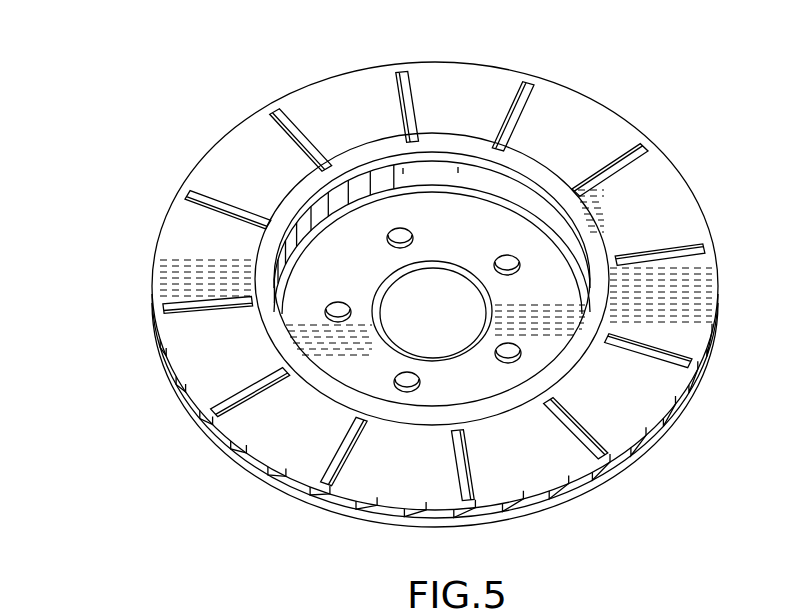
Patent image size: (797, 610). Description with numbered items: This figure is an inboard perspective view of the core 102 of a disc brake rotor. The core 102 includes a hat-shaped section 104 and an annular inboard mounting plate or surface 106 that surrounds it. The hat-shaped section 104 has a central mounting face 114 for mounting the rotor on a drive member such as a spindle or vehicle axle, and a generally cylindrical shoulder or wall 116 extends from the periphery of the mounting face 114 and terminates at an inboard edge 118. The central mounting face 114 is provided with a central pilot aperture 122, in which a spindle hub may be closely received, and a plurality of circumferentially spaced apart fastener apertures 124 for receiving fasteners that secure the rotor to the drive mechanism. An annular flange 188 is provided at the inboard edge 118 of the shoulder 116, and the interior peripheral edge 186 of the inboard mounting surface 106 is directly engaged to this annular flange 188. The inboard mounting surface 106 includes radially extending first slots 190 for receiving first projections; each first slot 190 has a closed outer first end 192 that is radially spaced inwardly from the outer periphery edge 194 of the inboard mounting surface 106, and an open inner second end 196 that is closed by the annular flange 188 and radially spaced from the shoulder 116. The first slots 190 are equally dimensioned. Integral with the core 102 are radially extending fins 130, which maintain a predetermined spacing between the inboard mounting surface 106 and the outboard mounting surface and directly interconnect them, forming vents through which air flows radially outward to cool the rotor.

The core 102 is at (676, 108).
The hat-shaped section 104 is at (347, 368).
The inboard mounting surface 106 is at (669, 199).
The central mounting face 114 is at (474, 222).
The shoulder 116 is at (381, 176).
The inboard edge 118 is at (293, 330).
The central pilot aperture 122 is at (437, 273).
The fastener apertures 124 is at (507, 253).
The fins 130 is at (397, 517).
The interior peripheral edge 186 is at (580, 373).
The annular flange 188 is at (268, 241).
The first slots 190 is at (658, 341).
The closed outer first end 192 is at (703, 254).
The outer periphery edge 194 is at (571, 87).
The open inner second end 196 is at (417, 118).